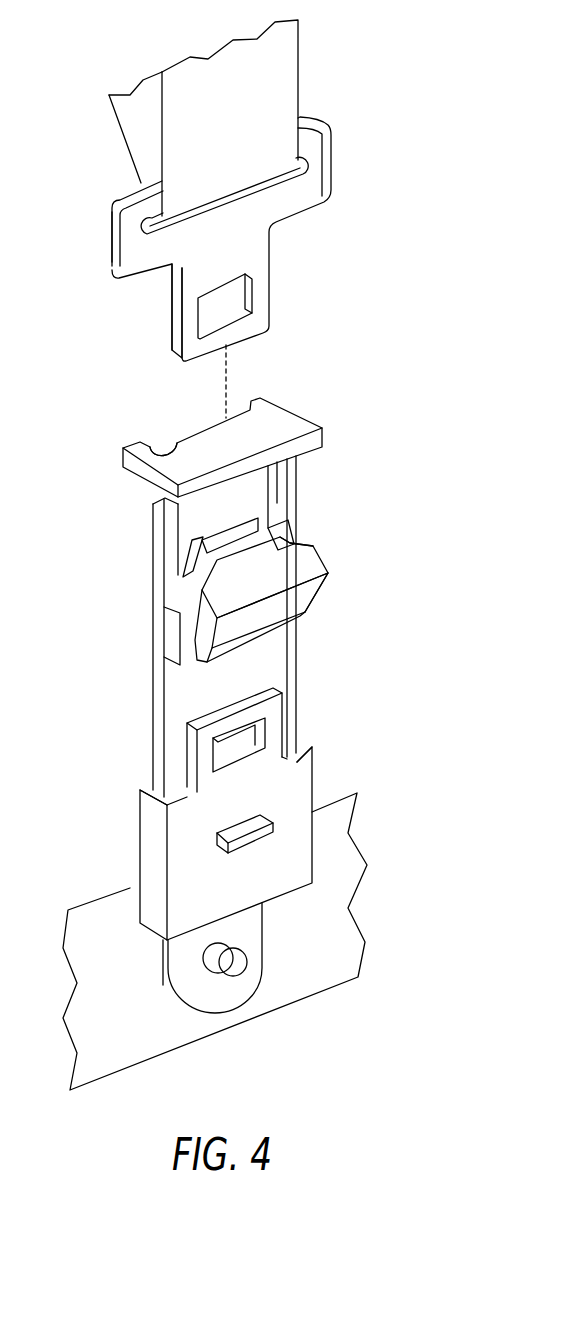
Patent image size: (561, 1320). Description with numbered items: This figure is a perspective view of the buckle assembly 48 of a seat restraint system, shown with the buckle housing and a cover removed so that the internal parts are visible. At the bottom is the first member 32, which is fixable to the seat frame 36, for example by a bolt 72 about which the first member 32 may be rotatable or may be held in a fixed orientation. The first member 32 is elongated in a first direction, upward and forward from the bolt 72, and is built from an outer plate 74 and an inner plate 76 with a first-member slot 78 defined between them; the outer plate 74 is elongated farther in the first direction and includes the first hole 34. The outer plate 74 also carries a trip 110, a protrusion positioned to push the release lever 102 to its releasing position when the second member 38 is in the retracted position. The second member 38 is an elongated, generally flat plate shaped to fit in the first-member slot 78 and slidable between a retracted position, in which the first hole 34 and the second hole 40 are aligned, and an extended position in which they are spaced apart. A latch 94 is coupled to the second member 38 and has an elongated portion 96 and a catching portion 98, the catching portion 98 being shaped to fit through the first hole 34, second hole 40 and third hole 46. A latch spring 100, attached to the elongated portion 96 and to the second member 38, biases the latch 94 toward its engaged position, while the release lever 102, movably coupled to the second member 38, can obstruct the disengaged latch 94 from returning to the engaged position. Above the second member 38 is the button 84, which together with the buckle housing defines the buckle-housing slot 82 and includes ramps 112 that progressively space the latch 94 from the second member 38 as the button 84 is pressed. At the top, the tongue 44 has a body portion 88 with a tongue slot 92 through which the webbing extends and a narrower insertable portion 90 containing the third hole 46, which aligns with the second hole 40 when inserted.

The first member 32 is at (223, 849).
The first hole 34 is at (267, 727).
The seat frame 36 is at (327, 992).
The second member 38 is at (236, 626).
The second hole 40 is at (225, 540).
The tongue 44 is at (212, 239).
The third hole 46 is at (252, 298).
The buckle assembly 48 is at (100, 411).
The bolt 72 is at (208, 972).
The outer plate 74 is at (183, 742).
The inner plate 76 is at (145, 790).
The first-member slot 78 is at (287, 750).
The buckle-housing slot 82 is at (160, 456).
The button 84 is at (219, 434).
The body portion 88 is at (110, 225).
The insertable portion 90 is at (172, 308).
The tongue slot 92 is at (306, 163).
The latch 94 is at (235, 594).
The elongated portion 96 is at (320, 597).
The catching portion 98 is at (290, 540).
The latch spring 100 is at (192, 640).
The release lever 102 is at (233, 657).
The trip 110 is at (242, 850).
The ramps 112 is at (290, 510).